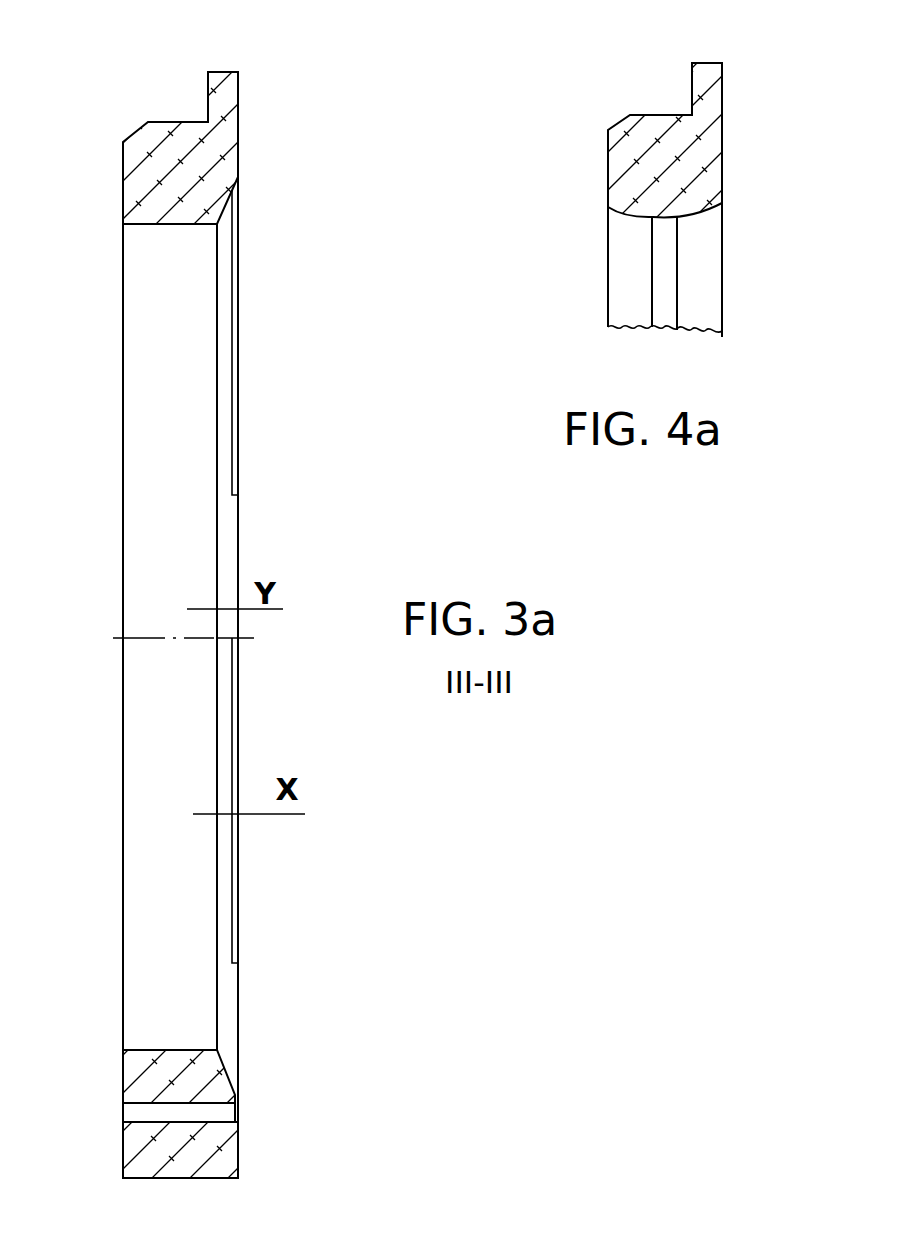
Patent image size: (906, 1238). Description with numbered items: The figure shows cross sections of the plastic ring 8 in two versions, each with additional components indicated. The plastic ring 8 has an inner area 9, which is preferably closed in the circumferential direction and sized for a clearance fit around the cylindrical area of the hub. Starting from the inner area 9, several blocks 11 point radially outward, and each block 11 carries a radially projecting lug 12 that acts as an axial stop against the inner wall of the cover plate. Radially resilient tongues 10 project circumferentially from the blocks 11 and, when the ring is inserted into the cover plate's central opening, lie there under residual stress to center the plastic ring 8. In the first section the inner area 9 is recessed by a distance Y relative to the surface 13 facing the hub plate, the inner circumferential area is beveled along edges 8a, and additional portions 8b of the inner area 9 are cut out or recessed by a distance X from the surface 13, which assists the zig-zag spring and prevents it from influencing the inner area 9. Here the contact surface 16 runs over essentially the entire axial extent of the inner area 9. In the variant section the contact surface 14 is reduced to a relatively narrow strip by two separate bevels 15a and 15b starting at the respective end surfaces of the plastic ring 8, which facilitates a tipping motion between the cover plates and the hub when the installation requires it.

In FIG. 3A, the plastic ring 8 is at (211, 613).
In FIG. 4A, the plastic ring 8 is at (665, 215).
In FIG. 3A, the beveled edges 8a is at (224, 232).
In FIG. 3A, the additional portions 8b is at (233, 195).
In FIG. 3A, the inner area 9 is at (137, 1062).
In FIG. 3A, the tongues 10 is at (137, 1145).
In FIG. 3A, the blocks 11 is at (138, 187).
In FIG. 4A, the blocks 11 is at (633, 170).
In FIG. 3A, the radially projecting lug 12 is at (222, 97).
In FIG. 3A, the surface facing the hub plate 13 is at (240, 130).
In FIG. 4A, the contact surface 14 is at (663, 310).
In FIG. 4A, the first bevel 15a is at (633, 268).
In FIG. 4A, the second bevel 15b is at (710, 267).
In FIG. 3A, the contact surface 16 is at (197, 387).